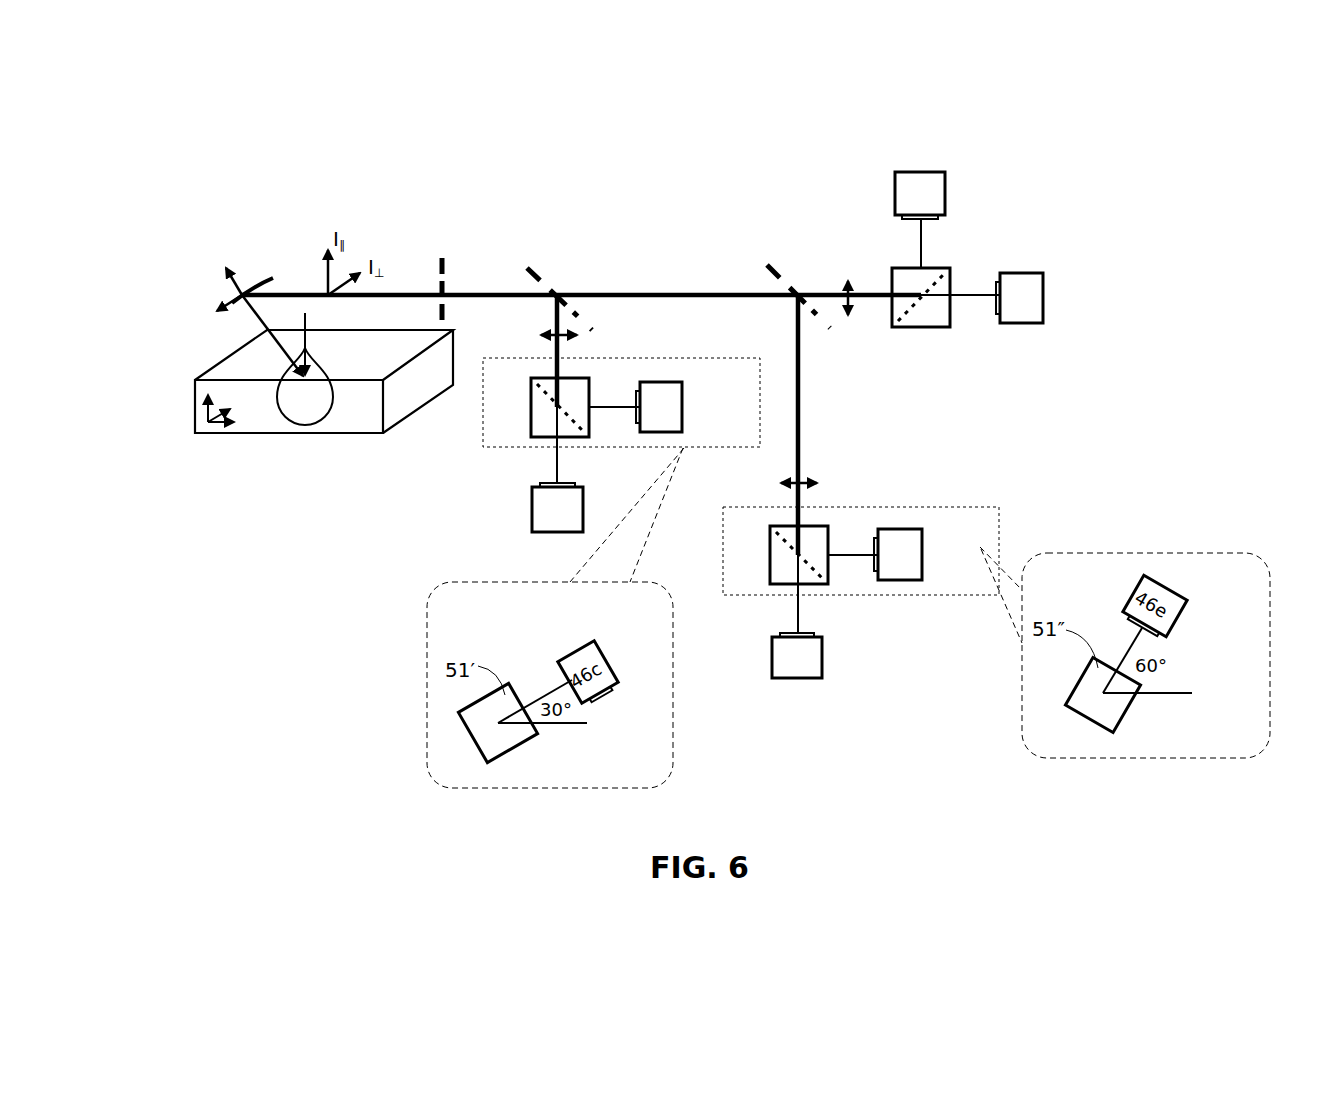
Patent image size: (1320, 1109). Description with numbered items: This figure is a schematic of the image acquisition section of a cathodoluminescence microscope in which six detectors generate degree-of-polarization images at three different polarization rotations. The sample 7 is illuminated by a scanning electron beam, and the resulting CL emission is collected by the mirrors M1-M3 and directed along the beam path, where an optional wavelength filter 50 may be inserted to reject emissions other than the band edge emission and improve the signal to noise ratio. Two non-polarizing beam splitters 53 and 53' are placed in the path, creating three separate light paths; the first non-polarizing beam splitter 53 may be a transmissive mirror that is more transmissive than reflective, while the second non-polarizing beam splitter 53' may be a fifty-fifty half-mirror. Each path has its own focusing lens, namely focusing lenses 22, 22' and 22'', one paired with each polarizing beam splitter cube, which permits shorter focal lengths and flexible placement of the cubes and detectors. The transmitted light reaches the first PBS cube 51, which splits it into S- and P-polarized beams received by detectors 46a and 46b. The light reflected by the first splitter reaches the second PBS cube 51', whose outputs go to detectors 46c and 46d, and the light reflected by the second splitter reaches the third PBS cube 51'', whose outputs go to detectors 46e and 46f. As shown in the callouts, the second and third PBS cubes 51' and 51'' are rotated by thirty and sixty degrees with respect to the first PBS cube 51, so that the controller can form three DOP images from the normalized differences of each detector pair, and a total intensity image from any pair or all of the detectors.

The sample 7 is at (324, 369).
The focusing lens 22 is at (820, 271).
The focusing lens 22' is at (538, 330).
The focusing lens 22'' is at (822, 484).
The light detector 46a is at (920, 195).
The light detector 46b is at (1019, 298).
The light detector 46c is at (659, 407).
The light detector 46d is at (557, 507).
The light detector 46e is at (898, 554).
The light detector 46f is at (797, 655).
The wavelength filter 50 is at (441, 258).
The polarizing beam splitter cube 51 is at (896, 274).
The second polarizing beam splitter cube 51' is at (536, 406).
The third polarizing beam splitter cube 51'' is at (770, 533).
The non-polarizing beam splitter 53 is at (534, 272).
The non-polarizing beam splitter 53' is at (770, 275).
The mirrors M1-M3 is at (202, 289).